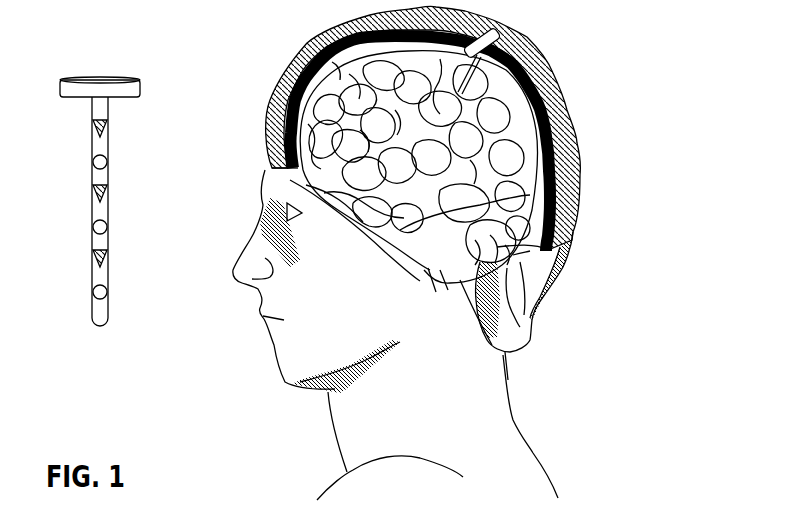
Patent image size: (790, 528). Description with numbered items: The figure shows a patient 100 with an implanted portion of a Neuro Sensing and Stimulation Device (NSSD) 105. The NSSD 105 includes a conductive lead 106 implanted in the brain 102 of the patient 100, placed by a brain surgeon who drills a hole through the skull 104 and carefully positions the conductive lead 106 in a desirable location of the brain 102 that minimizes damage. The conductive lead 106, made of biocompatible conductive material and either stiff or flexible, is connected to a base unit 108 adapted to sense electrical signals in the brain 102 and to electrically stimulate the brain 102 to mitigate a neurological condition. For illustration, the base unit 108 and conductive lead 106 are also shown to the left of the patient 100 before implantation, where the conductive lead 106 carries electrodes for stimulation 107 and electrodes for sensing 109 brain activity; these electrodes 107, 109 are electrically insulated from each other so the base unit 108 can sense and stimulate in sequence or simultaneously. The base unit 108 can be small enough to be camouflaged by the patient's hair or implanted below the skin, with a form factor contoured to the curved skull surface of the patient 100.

The patient 100 is at (103, 437).
The brain 102 is at (495, 146).
The skull 104 is at (540, 128).
The Neuro Sensing and Stimulation Device (NSSD) 105 is at (655, 82).
The conductive lead 106 is at (108, 315).
The electrodes for stimulation 107 is at (105, 127).
The base unit 108 is at (115, 89).
The electrodes for sensing 109 is at (100, 230).